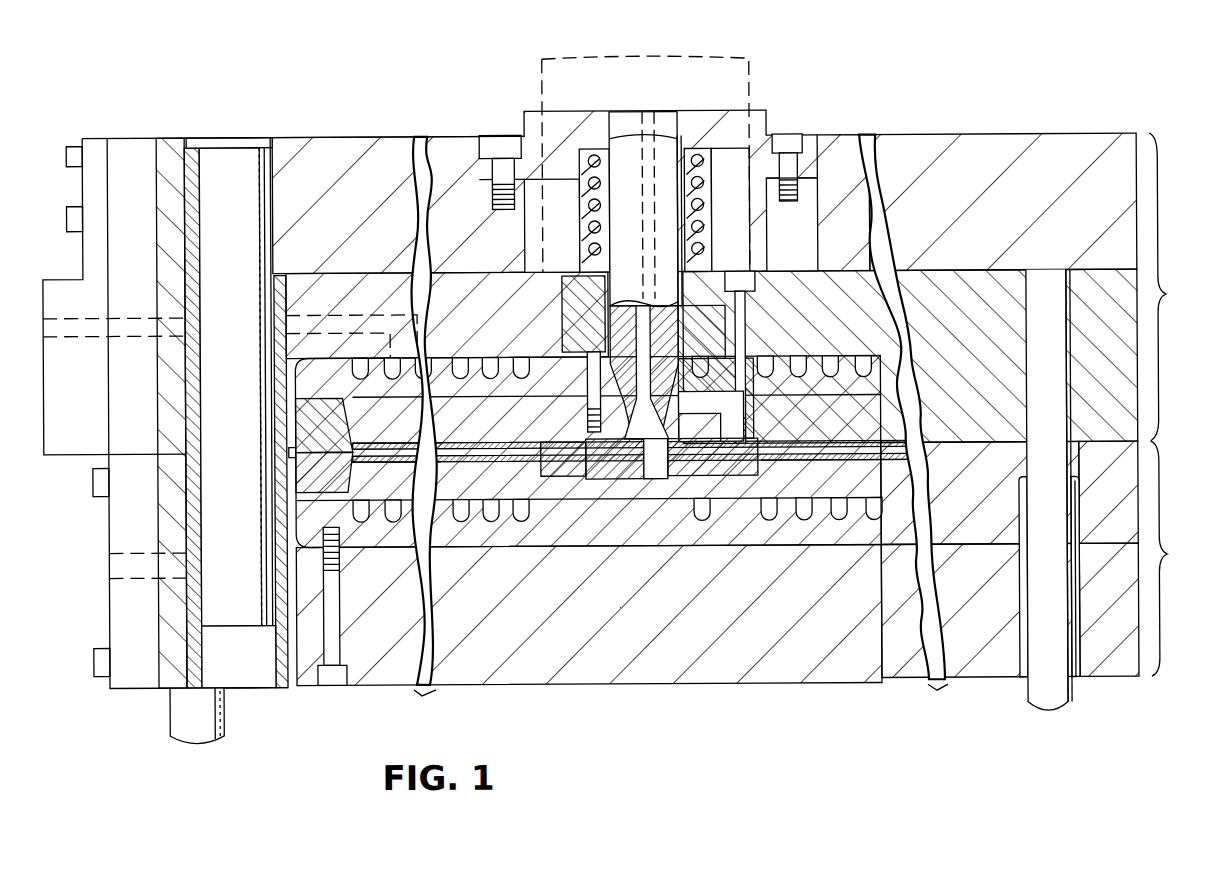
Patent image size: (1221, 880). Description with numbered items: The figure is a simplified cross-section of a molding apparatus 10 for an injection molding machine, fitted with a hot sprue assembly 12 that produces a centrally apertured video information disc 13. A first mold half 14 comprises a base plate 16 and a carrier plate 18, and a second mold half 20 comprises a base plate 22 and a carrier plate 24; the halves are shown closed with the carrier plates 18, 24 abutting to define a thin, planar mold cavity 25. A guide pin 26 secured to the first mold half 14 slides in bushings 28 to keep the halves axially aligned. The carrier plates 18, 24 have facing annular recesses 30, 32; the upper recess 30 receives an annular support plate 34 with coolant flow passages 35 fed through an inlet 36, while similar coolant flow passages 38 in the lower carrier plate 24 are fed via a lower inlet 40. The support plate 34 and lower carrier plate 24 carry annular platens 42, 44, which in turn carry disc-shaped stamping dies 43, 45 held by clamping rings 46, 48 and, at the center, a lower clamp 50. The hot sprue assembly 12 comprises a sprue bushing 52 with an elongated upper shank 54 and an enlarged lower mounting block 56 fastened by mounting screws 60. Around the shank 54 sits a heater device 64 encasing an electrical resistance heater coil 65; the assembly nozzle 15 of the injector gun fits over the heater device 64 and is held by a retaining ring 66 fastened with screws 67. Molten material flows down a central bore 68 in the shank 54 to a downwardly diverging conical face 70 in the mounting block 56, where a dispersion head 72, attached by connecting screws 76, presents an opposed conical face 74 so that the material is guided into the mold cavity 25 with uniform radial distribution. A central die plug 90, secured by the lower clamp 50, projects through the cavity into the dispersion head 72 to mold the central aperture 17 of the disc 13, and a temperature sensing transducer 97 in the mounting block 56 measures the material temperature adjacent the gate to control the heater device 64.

The molding apparatus 10 is at (300, 128).
The hot sprue assembly 12 is at (718, 246).
The video information disc 13 is at (820, 463).
The first mold half 14 is at (1174, 287).
The assembly nozzle 15 is at (750, 66).
The base plate 16 is at (990, 136).
The central aperture 17 is at (716, 478).
The carrier plate 18 is at (960, 284).
The second mold half 20 is at (1179, 558).
The base plate 22 is at (884, 672).
The carrier plate 24 is at (968, 548).
The mold cavity 25 is at (480, 452).
The guide pin 26 is at (262, 195).
The bushing 28 is at (282, 284).
The annular plate-shaped recess 30 is at (826, 356).
The annular plate-shaped recess 32 is at (748, 505).
The annular support plate 34 is at (882, 366).
The flow passages 35 is at (862, 356).
The inlet 36 is at (138, 336).
The coolant flow passages 38 is at (505, 520).
The lower inlet 40 is at (138, 578).
The annular platen 42 is at (890, 418).
The stamping die 43 is at (386, 442).
The annular platen 44 is at (905, 472).
The stamping die 45 is at (370, 460).
The annular clamping ring 46 is at (340, 404).
The annular clamping ring 48 is at (336, 486).
The lower clamp 50 is at (572, 480).
The sprue bushing 52 is at (616, 290).
The upper shank 54 is at (618, 212).
The lower mounting block 56 is at (752, 418).
The mounting screw 60 is at (758, 300).
The heater device 64 is at (700, 170).
The electrical resistance heater coil 65 is at (703, 186).
The retaining ring 66 is at (822, 134).
The screws 67 is at (786, 134).
The central bore 68 is at (640, 140).
The conical face 70 is at (735, 360).
The dispersion head 72 is at (620, 482).
The conical face 74 is at (716, 440).
The connecting screws 76 is at (703, 350).
The central die plug 90 is at (655, 482).
The temperature sensing transducer 97 is at (575, 430).